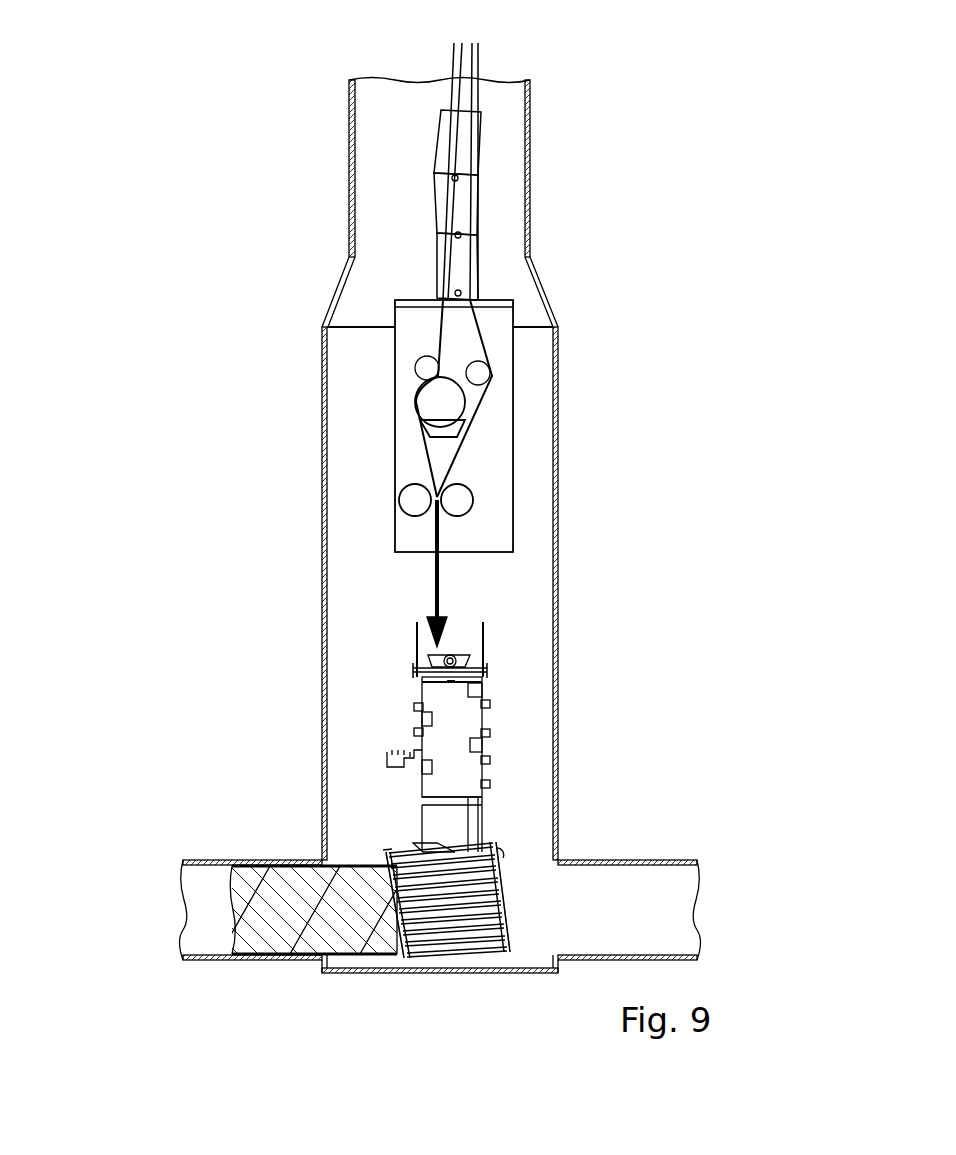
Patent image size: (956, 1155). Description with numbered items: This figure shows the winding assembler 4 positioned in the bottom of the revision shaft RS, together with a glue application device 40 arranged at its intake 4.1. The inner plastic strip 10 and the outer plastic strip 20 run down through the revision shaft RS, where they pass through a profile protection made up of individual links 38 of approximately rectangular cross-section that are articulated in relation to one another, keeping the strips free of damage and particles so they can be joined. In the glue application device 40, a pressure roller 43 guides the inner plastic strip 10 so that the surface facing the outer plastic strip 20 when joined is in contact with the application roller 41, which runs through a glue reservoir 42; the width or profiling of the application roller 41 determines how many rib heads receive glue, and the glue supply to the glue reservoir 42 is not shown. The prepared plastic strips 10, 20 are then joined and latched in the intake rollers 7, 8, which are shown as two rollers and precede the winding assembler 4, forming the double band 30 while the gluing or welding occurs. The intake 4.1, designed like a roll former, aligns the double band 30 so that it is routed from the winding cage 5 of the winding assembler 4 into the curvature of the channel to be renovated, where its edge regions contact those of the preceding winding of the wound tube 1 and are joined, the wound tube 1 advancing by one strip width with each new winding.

The wound tube 1 is at (308, 918).
The winding assembler 4 is at (527, 847).
The intake 4.1 is at (467, 722).
The winding cage 5 is at (502, 905).
The intake roller 7 is at (457, 500).
The intake roller 8 is at (415, 500).
The inner plastic strip 10 is at (454, 48).
The outer plastic strip 20 is at (478, 48).
The double band 30 is at (438, 594).
The links 38 is at (445, 140).
The glue application device 40 is at (513, 397).
The application roller 41 is at (437, 402).
The glue reservoir 42 is at (468, 430).
The pressure roller 43 is at (427, 368).
The revision shaft RS is at (530, 165).